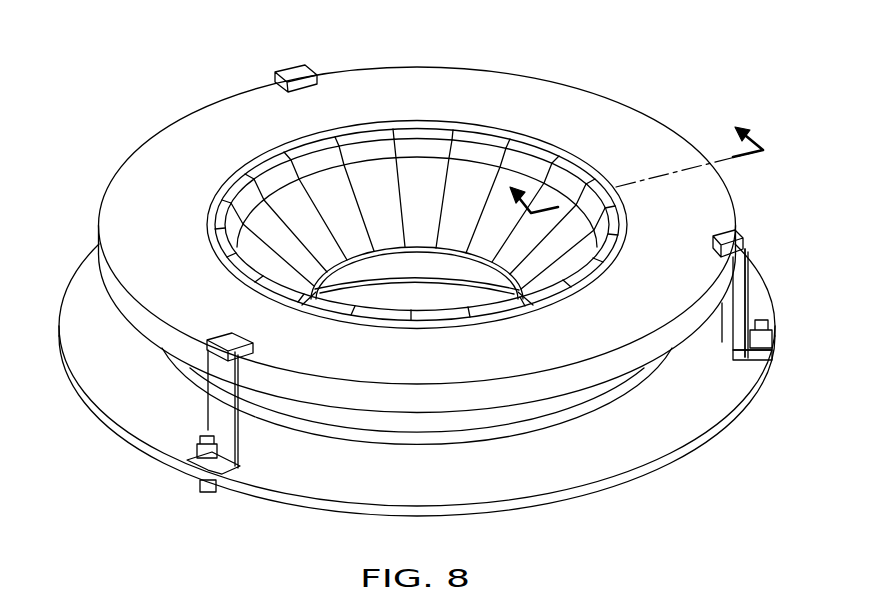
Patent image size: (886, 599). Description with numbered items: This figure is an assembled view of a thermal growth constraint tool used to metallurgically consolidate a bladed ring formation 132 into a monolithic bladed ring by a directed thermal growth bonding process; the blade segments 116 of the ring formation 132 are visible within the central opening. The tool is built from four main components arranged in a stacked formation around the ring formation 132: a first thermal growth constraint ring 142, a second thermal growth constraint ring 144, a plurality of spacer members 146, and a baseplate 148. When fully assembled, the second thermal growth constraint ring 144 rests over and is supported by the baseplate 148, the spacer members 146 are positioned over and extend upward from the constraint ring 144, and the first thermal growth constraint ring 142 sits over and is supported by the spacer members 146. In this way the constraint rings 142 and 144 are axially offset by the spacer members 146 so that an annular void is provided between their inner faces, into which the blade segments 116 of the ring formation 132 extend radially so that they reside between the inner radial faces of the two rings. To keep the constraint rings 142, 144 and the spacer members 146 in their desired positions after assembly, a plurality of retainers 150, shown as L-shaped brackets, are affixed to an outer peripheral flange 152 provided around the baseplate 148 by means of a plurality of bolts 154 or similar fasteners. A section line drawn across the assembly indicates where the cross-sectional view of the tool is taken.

The vanes 116 is at (312, 146).
The ring formation 132 is at (482, 128).
The first thermal growth constraint ring 142 is at (615, 108).
The second thermal growth constraint ring 144 is at (303, 440).
The spacer members 146 is at (247, 410).
The baseplate 148 is at (748, 424).
The retainers 150 is at (295, 72).
The outer peripheral flange 152 is at (757, 277).
The bolts 154 is at (203, 460).